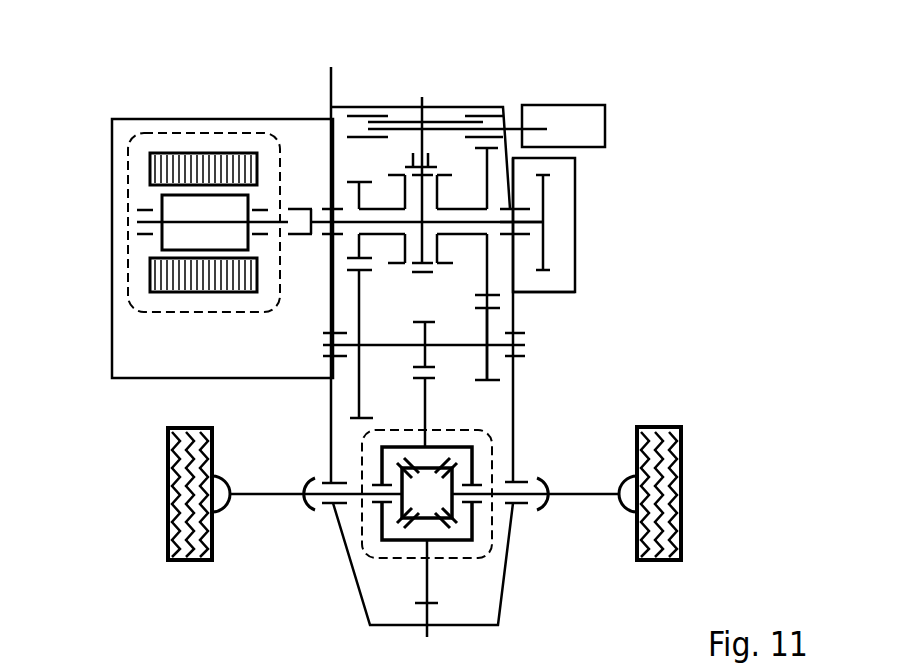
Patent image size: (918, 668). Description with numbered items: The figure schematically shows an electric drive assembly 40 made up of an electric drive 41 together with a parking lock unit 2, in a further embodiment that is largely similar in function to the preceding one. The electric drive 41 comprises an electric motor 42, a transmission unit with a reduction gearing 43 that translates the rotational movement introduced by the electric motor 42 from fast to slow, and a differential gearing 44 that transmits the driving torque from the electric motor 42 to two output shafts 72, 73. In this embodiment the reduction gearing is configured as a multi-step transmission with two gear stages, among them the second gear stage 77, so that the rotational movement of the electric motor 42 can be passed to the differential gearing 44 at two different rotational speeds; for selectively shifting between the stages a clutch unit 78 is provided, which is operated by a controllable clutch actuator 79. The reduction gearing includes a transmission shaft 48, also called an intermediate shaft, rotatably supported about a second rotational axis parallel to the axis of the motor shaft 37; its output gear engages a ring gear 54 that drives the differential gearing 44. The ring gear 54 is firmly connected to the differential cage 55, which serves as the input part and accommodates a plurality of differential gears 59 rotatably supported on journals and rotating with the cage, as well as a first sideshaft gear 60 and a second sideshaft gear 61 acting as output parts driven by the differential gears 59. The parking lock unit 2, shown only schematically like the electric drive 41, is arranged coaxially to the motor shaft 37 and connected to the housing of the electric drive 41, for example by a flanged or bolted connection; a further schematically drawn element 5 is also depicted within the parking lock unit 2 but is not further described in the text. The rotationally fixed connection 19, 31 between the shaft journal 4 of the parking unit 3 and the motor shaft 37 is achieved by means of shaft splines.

The parking lock unit 2 is at (577, 193).
The parking unit 3 is at (578, 276).
The shaft journal 4 is at (533, 223).
The gear 5 is at (548, 256).
The rotationally fixed connection 19 is at (520, 218).
The rotationally fixed connection 31 is at (520, 218).
The motor shaft 37 is at (282, 222).
The electric drive assembly 40 is at (675, 68).
The electric drive 41 is at (387, 86).
The electric motor 42 is at (213, 148).
The reduction gearing 43 is at (509, 305).
The differential gearing 44 is at (478, 560).
The transmission shaft 48 is at (470, 342).
The ring gear 54 is at (432, 586).
The differential cage 55 is at (402, 540).
The differential gears 59 is at (410, 464).
The first sideshaft gear 60 is at (455, 505).
The second sideshaft gear 61 is at (402, 503).
The output shaft 72 is at (498, 478).
The output shaft 73 is at (380, 486).
The second gear stage 77 is at (506, 364).
The clutch unit 78 is at (438, 160).
The clutch actuator 79 is at (555, 105).